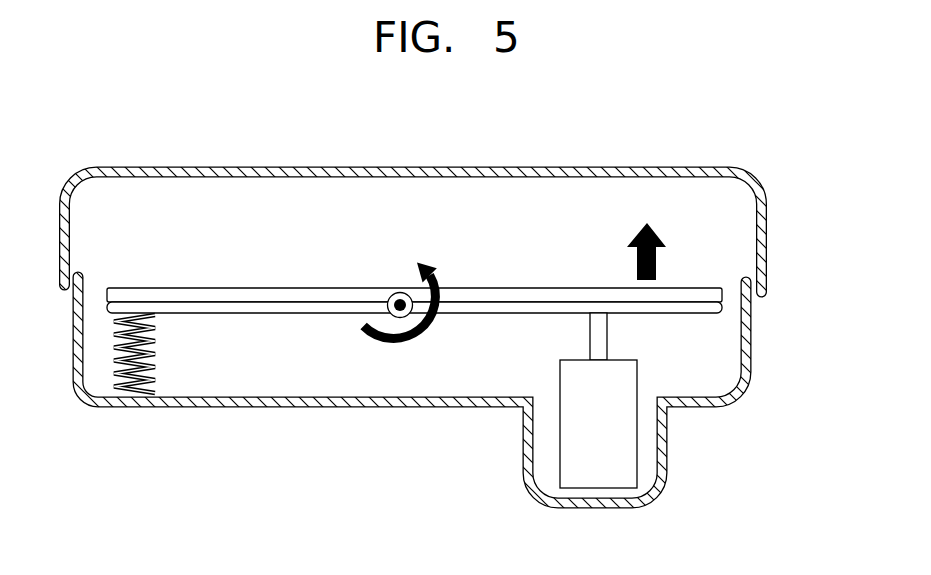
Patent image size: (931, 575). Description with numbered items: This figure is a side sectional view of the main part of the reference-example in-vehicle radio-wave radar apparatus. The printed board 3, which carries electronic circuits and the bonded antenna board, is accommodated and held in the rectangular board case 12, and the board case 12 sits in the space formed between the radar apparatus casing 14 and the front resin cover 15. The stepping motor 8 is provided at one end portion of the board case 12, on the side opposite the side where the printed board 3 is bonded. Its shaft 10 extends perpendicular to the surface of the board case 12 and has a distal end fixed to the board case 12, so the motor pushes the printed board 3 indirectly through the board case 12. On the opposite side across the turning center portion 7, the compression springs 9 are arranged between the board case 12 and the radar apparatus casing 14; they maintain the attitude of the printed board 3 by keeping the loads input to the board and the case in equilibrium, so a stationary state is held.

The front resin cover 15 is at (707, 171).
The radar apparatus casing 14 is at (255, 407).
The printed board 3 is at (223, 297).
The board case 12 is at (277, 316).
The turning center portion 7 is at (397, 293).
The compression spring 9 is at (157, 362).
The shaft 10 is at (598, 340).
The stepping motor 8 is at (594, 470).